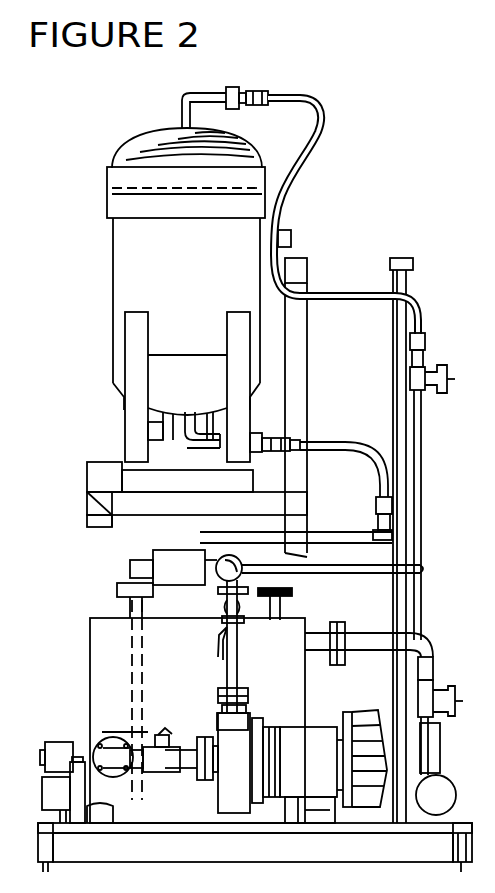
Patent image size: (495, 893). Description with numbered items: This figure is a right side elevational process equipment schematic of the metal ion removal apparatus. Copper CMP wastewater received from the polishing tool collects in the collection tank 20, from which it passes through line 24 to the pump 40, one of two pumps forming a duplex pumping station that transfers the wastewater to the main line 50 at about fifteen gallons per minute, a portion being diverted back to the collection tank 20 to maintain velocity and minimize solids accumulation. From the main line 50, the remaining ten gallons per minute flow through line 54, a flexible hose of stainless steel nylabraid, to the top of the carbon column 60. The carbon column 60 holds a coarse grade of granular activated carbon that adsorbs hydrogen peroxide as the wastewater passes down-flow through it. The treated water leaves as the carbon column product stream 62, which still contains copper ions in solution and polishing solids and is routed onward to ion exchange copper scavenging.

The carbon column 60 is at (147, 128).
The line 54 is at (326, 112).
The carbon column product stream 62 is at (334, 440).
The main line 50 is at (314, 577).
The collection tank 20 is at (90, 643).
The pump 40 is at (298, 717).
The line 24 is at (166, 779).